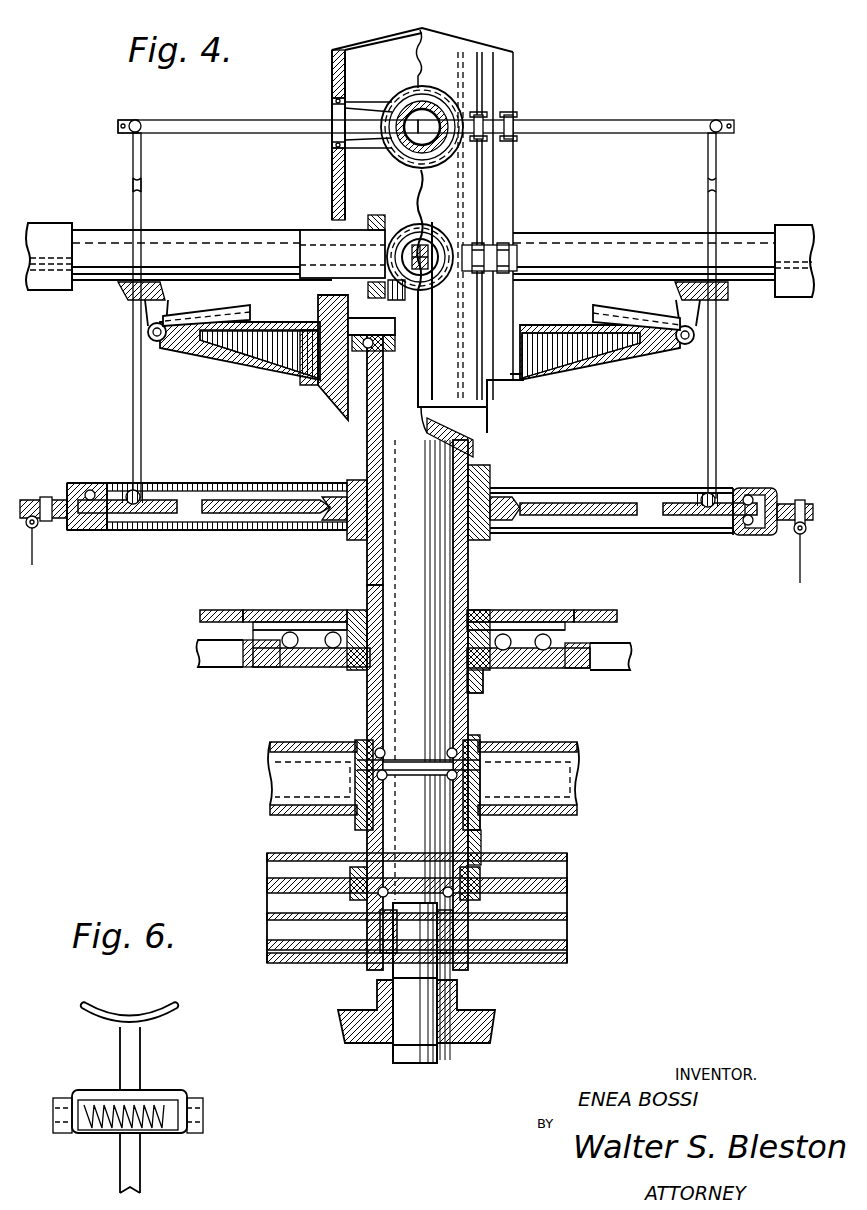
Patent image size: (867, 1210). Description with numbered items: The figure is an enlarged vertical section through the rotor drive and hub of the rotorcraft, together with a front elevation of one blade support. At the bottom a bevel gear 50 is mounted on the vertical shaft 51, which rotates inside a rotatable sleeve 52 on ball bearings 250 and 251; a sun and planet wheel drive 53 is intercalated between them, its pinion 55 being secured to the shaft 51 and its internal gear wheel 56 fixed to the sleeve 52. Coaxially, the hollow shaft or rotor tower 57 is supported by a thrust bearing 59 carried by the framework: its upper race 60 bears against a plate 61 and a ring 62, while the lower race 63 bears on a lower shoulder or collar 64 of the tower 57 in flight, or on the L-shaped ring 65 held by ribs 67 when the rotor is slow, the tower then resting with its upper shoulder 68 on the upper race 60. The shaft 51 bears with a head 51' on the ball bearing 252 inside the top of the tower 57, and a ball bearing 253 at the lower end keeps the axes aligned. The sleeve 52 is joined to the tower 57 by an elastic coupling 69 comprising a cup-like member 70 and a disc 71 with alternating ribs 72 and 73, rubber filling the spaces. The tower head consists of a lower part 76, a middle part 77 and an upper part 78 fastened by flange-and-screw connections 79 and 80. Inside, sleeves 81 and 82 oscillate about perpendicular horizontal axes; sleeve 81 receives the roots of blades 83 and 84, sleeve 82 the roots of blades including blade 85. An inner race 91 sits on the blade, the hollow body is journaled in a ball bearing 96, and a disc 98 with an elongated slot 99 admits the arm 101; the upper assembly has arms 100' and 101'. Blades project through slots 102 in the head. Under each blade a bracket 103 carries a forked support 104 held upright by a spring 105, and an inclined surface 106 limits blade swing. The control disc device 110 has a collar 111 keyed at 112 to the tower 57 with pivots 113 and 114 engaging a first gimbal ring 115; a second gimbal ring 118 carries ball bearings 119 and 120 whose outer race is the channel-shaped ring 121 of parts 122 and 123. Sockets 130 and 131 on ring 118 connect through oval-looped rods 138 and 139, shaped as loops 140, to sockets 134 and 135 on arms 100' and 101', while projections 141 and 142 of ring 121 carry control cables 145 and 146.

In FIG. 4, the bevel gear 50 is at (478, 1022).
In FIG. 4, the vertical shaft 51 is at (380, 767).
In FIG. 4, the head 51' is at (369, 443).
In FIG. 4, the sleeve 52 is at (468, 840).
In FIG. 4, the sun and planet wheel drive 53 is at (572, 852).
In FIG. 4, the pinion 55 is at (372, 960).
In FIG. 4, the internal gear wheel 56 is at (568, 890).
In FIG. 4, the hollow shaft or rotor tower 57 is at (472, 468).
In FIG. 4, the thrust bearing 59 is at (317, 674).
In FIG. 4, the upper race 60 is at (548, 610).
In FIG. 4, the plate 61 is at (267, 610).
In FIG. 4, the ring 62 is at (228, 612).
In FIG. 4, the lower race 63 is at (550, 668).
In FIG. 4, the lower shoulder or collar 64 is at (484, 686).
In FIG. 4, the L-shaped ring 65 is at (605, 665).
In FIG. 4, the ribs 67 is at (225, 660).
In FIG. 4, the upper shoulder 68 is at (368, 592).
In FIG. 4, the elastic coupling 69 is at (604, 776).
In FIG. 4, the cup-like member 70 is at (545, 815).
In FIG. 4, the disc 71 is at (560, 742).
In FIG. 4, the ribs 72 is at (318, 742).
In FIG. 4, the ribs 73 is at (275, 775).
In FIG. 4, the lower part 76 is at (503, 380).
In FIG. 4, the middle part 77 is at (512, 180).
In FIG. 4, the upper part 78 is at (505, 85).
In FIG. 4, the flange-and-screw connection 79 is at (522, 245).
In FIG. 4, the flange-and-screw connection 80 is at (517, 122).
In FIG. 4, the sleeve 81 is at (398, 218).
In FIG. 4, the sleeve 82 is at (388, 160).
In FIG. 4, the blade 83 is at (212, 229).
In FIG. 4, the blade 84 is at (585, 233).
In FIG. 4, the blade 85 is at (418, 140).
In FIG. 4, the inner race 91 is at (377, 236).
In FIG. 4, the ball bearing 96 is at (436, 286).
In FIG. 4, the disc 98 is at (432, 262).
In FIG. 4, the elongated slot 99 is at (430, 233).
In FIG. 4, the arm 100' is at (268, 112).
In FIG. 4, the arm 101 is at (406, 298).
In FIG. 4, the arm 101' is at (576, 112).
In FIG. 4, the slot 102 is at (322, 226).
In FIG. 4, the bracket 103 is at (255, 350).
In FIG. 6, the bracket 103 is at (132, 1168).
In FIG. 4, the forked support 104 is at (165, 305).
In FIG. 6, the forked support 104 is at (132, 1052).
In FIG. 6, the spring 105 is at (150, 1105).
In FIG. 4, the inclined surface 106 is at (222, 311).
In FIG. 4, the control disc device 110 is at (255, 476).
In FIG. 4, the collar or sleeve 111 is at (350, 478).
In FIG. 4, the key 112 is at (357, 480).
In FIG. 4, the pivot 113 is at (335, 520).
In FIG. 4, the pivot 114 is at (492, 520).
In FIG. 4, the first gimbal ring 115 is at (578, 500).
In FIG. 4, the second gimbal ring 118 is at (678, 516).
In FIG. 4, the ball bearing 119 is at (91, 490).
In FIG. 4, the ball bearing 120 is at (748, 525).
In FIG. 4, the channel-shaped ring 121 is at (731, 543).
In FIG. 4, the ring part 122 is at (765, 488).
In FIG. 4, the ring part 123 is at (772, 538).
In FIG. 4, the ball bearing socket 130 is at (140, 490).
In FIG. 4, the ball bearing socket 131 is at (703, 492).
In FIG. 4, the ball bearing socket 134 is at (133, 120).
In FIG. 4, the ball bearing socket 135 is at (722, 121).
In FIG. 4, the ball-headed rod 138 is at (133, 396).
In FIG. 4, the ball-headed rod 139 is at (718, 345).
In FIG. 4, the oval loop 140 is at (134, 313).
In FIG. 4, the projection 141 is at (40, 497).
In FIG. 4, the projection 142 is at (790, 503).
In FIG. 4, the cable 145 is at (32, 549).
In FIG. 4, the cable 146 is at (800, 565).
In FIG. 4, the ball bearing 250 is at (385, 778).
In FIG. 4, the ball bearing 251 is at (395, 895).
In FIG. 4, the ball bearing 252 is at (398, 342).
In FIG. 4, the ball bearing 253 is at (388, 748).